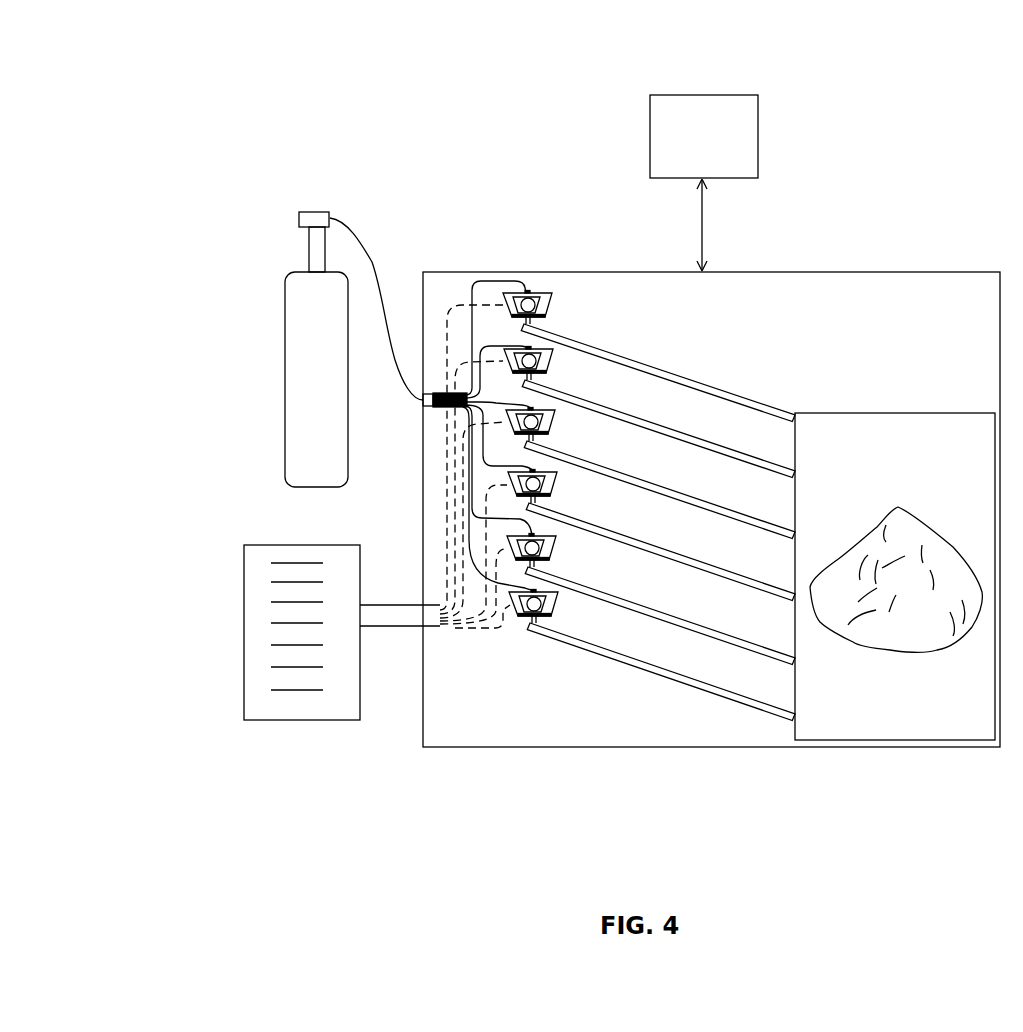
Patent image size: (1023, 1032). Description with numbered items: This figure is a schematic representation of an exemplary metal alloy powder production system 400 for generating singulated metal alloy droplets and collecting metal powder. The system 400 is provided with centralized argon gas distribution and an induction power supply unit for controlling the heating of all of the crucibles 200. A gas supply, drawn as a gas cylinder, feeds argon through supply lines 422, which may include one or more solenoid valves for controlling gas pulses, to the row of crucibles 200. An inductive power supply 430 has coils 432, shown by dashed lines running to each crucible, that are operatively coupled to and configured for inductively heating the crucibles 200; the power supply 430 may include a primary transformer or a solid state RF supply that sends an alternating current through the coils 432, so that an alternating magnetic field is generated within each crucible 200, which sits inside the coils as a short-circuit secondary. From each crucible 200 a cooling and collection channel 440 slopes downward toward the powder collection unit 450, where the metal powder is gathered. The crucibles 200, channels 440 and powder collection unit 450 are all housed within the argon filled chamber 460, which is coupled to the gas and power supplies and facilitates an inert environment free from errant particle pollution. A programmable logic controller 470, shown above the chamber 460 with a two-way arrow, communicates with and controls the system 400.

The system 400 is at (960, 124).
The crucibles 200 is at (550, 294).
The supply lines 422 is at (433, 406).
The inductive power supply 430 is at (244, 612).
The coils 432 is at (285, 328).
The cooling and collection channels 440 is at (693, 688).
The powder collection unit 450 is at (857, 716).
The chamber 460 is at (855, 272).
The programmable logic controller 470 is at (758, 137).